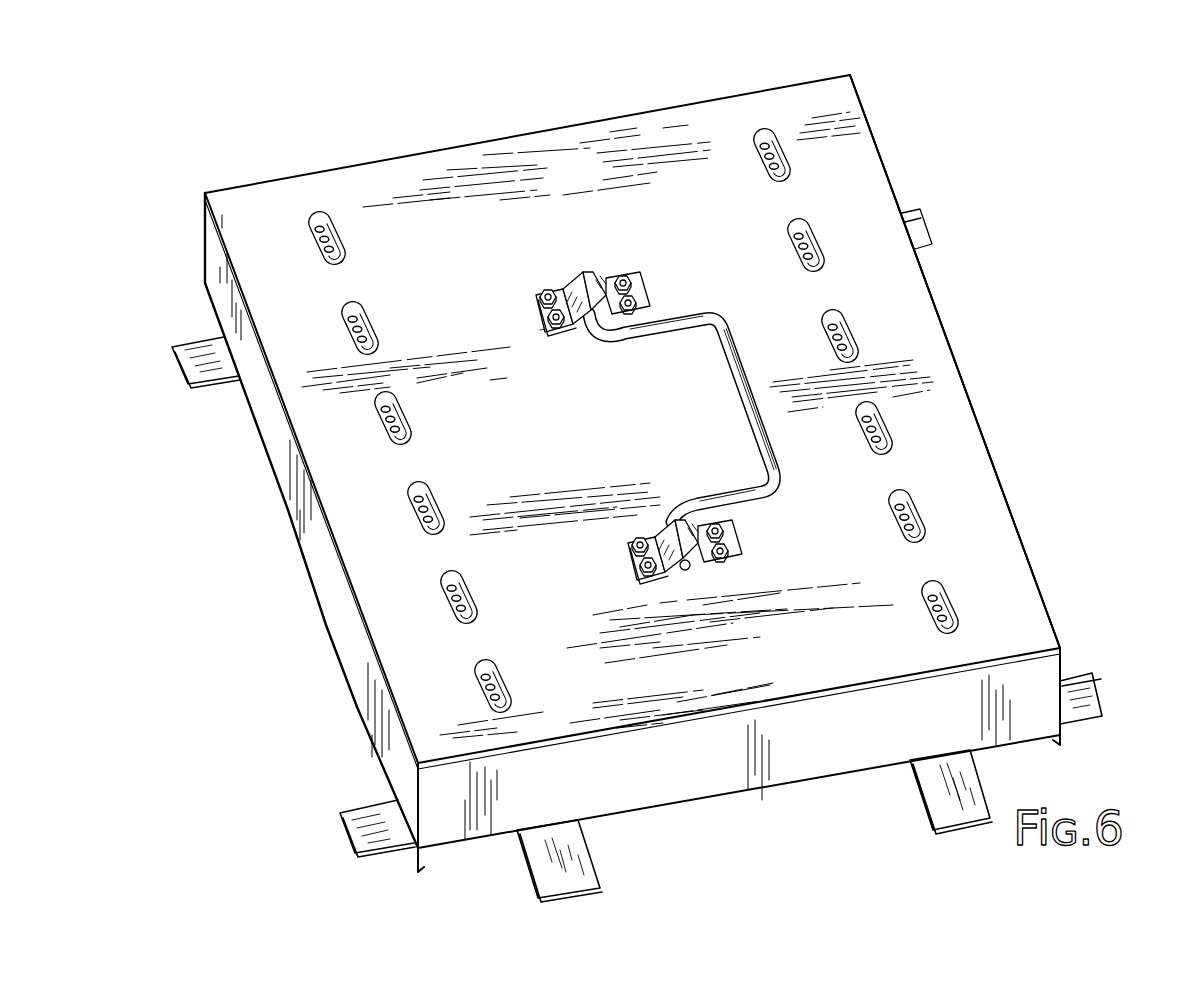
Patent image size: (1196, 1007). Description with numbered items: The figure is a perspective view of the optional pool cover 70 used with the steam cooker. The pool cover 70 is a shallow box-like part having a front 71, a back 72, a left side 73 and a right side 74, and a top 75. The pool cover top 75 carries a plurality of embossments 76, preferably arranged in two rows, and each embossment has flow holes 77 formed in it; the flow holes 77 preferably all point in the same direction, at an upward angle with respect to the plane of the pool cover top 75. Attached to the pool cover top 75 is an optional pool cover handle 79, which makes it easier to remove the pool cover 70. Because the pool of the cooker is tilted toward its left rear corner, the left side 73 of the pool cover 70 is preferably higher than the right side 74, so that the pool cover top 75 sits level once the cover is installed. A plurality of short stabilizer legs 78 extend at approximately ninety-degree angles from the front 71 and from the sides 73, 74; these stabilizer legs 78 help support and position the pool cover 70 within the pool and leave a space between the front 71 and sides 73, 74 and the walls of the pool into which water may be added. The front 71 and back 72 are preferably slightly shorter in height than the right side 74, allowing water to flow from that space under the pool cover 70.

The pool cover 70 is at (993, 136).
The front 71 is at (668, 781).
The back 72 is at (441, 131).
The left side 73 is at (333, 573).
The right side 74 is at (1000, 477).
The pool cover top 75 is at (612, 420).
The embossments 76 is at (950, 603).
The flow holes 77 is at (893, 515).
The stabilizer legs 78 is at (1090, 690).
The pool cover handle 79 is at (705, 303).